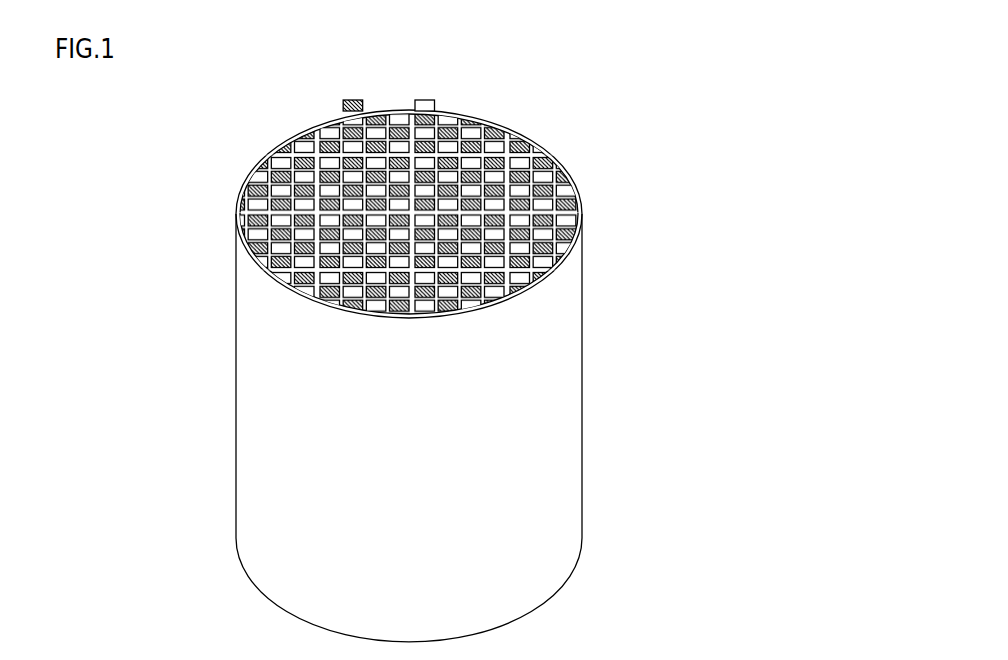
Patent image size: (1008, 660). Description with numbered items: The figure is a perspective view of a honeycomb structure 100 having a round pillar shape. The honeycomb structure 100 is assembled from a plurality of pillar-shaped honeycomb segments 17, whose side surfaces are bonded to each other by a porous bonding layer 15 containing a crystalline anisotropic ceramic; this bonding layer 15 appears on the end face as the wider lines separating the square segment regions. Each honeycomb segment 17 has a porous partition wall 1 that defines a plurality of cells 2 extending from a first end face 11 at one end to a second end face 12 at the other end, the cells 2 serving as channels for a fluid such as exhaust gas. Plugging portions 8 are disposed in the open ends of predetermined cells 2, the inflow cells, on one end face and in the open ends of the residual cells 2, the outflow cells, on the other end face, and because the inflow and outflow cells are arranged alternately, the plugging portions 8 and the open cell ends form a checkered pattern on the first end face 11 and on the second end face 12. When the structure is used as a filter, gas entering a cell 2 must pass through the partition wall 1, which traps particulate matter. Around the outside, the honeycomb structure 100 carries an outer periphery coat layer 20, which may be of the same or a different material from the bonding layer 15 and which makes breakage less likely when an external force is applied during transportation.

The honeycomb structure 100 is at (666, 83).
The partition wall 1 is at (357, 126).
The cell 2 is at (425, 132).
The plugging portion 8 is at (329, 140).
The first end face 11 is at (487, 118).
The second end face 12 is at (487, 632).
The bonding layer 15 is at (512, 290).
The honeycomb segment 17 is at (276, 182).
The outer periphery coat layer 20 is at (560, 418).